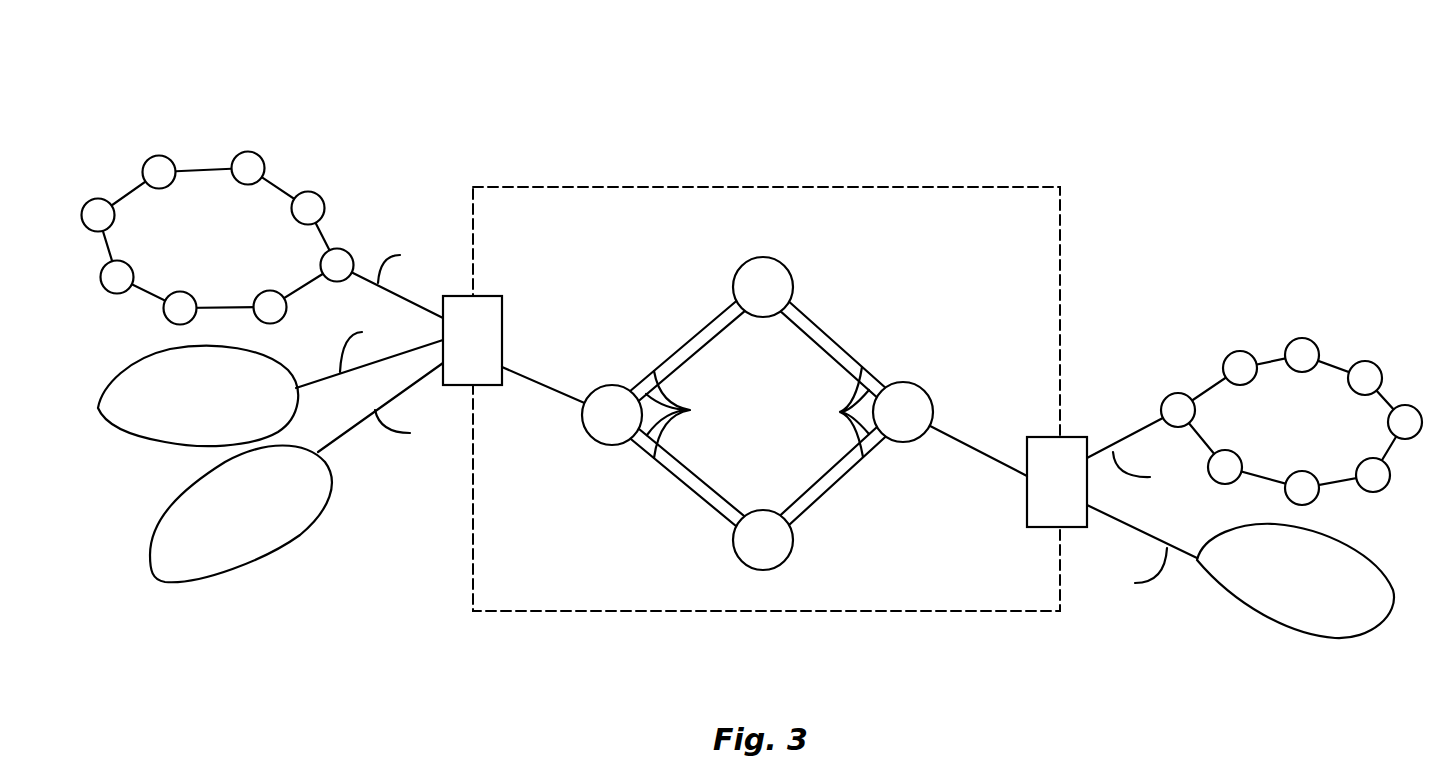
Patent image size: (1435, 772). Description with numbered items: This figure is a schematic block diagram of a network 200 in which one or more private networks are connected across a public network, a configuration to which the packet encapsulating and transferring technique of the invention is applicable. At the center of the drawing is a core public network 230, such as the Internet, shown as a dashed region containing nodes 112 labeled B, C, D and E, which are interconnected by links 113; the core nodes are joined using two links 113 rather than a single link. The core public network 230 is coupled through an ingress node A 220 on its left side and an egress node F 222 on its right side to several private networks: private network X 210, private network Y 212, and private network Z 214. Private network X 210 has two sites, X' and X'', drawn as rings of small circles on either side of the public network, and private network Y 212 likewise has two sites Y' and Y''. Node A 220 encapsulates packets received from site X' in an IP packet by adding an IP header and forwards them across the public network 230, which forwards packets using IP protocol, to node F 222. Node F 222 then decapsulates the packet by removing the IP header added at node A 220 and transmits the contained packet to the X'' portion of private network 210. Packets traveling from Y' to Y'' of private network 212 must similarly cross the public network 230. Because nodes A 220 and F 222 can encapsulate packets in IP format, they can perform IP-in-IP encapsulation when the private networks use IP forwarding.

The network 200 is at (1022, 107).
The private network X 210 is at (195, 168).
The private network Y 212 is at (108, 382).
The private network Z 214 is at (330, 483).
The ingress node A 220 is at (485, 296).
The egress node F 222 is at (1072, 437).
The core public network 230 is at (910, 611).
The nodes 112 is at (583, 418).
The links 113 is at (527, 370).